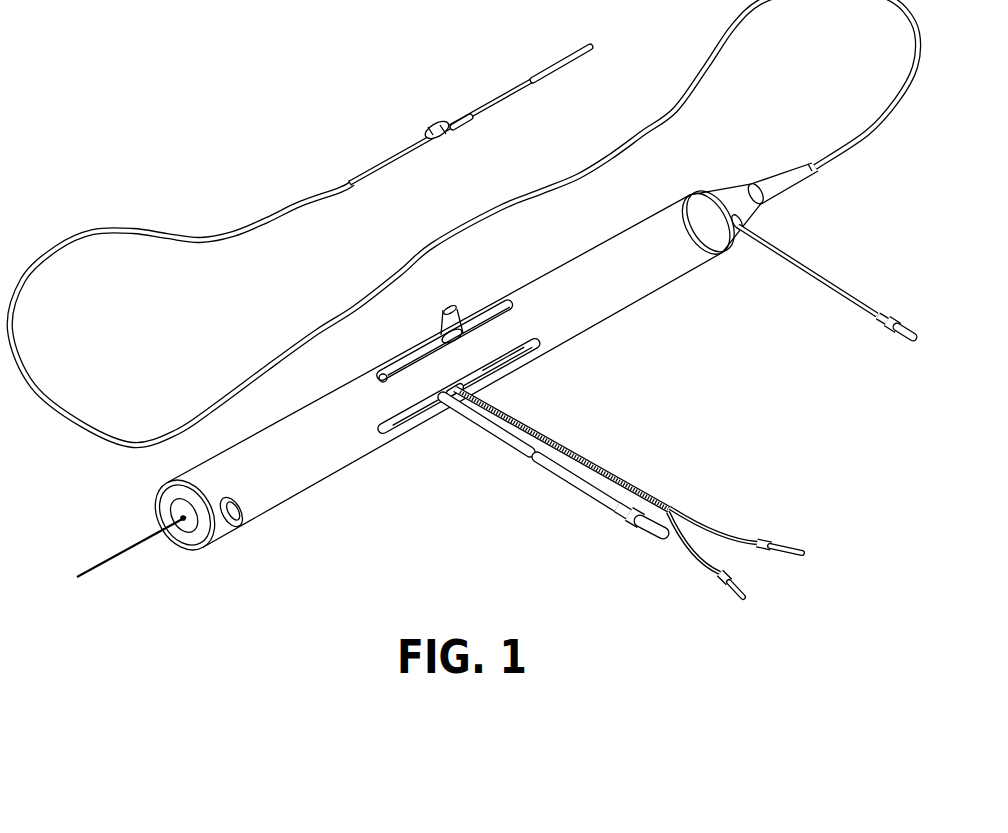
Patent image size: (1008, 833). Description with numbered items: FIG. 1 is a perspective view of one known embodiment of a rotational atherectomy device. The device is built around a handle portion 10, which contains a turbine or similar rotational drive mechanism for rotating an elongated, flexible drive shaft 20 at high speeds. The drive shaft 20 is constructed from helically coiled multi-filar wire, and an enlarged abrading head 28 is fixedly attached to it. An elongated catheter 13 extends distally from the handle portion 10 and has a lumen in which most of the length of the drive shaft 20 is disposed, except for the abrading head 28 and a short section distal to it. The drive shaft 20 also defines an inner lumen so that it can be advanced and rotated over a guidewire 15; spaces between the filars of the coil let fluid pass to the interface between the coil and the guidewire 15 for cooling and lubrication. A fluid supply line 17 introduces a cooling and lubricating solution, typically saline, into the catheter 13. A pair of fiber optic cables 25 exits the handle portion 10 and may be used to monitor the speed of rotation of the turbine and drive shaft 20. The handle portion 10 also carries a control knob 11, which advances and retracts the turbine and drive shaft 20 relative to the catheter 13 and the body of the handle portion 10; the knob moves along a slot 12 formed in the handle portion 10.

The handle portion 10 is at (552, 270).
The control knob 11 is at (450, 306).
The slot 12 is at (428, 338).
The catheter 13 is at (735, 30).
The guidewire 15 is at (499, 100).
The fluid supply line 17 is at (823, 277).
The drive shaft 20 is at (374, 133).
The fiber optic cables 25 is at (550, 438).
The abrading head 28 is at (448, 102).